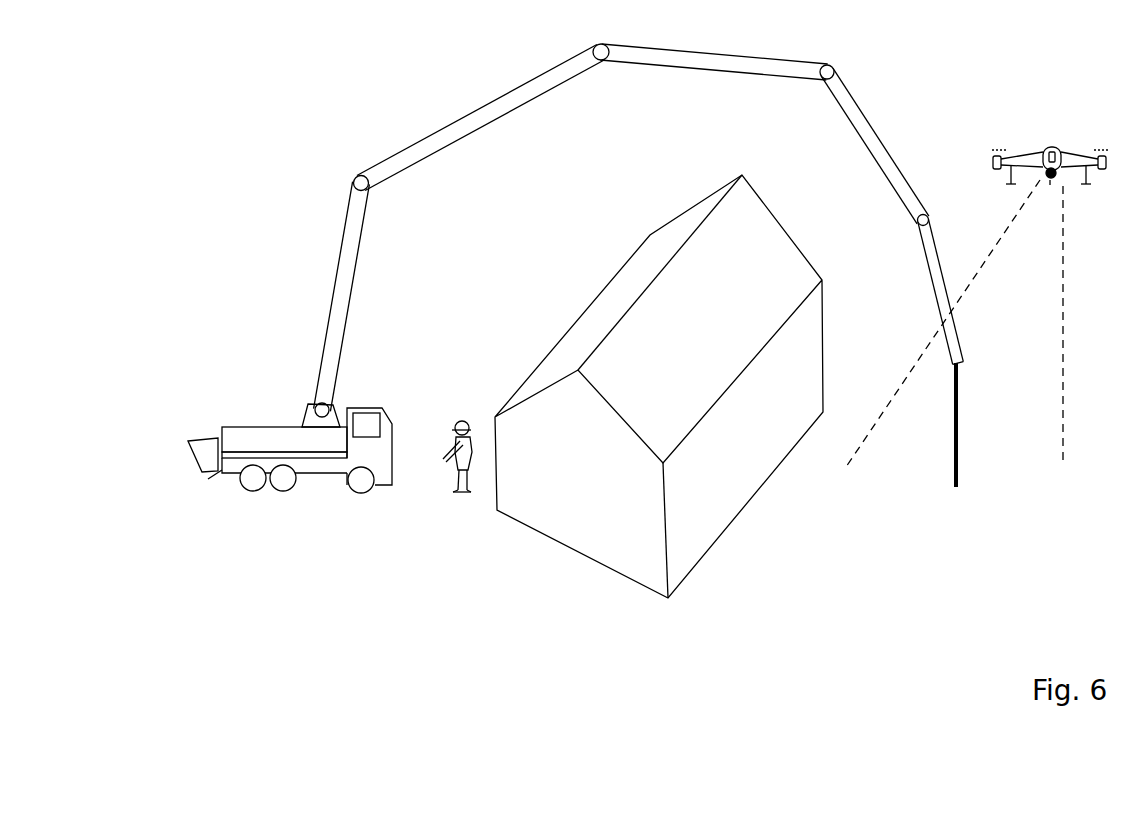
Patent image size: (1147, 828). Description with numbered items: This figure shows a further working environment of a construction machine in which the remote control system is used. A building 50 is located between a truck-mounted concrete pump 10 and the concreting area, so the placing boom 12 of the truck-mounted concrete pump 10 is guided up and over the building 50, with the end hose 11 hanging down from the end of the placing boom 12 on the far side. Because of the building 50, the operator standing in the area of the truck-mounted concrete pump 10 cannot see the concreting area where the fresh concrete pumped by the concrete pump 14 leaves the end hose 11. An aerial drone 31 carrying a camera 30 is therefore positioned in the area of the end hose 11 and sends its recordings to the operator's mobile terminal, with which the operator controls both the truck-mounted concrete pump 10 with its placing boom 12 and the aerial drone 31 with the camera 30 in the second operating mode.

The truck-mounted concrete pump 10 is at (286, 143).
The end hose 11 is at (911, 425).
The placing boom 12 is at (639, 226).
The concrete pump 14 is at (285, 424).
The camera 30 is at (993, 259).
The aerial drone 31 is at (1078, 111).
The building 50 is at (659, 434).